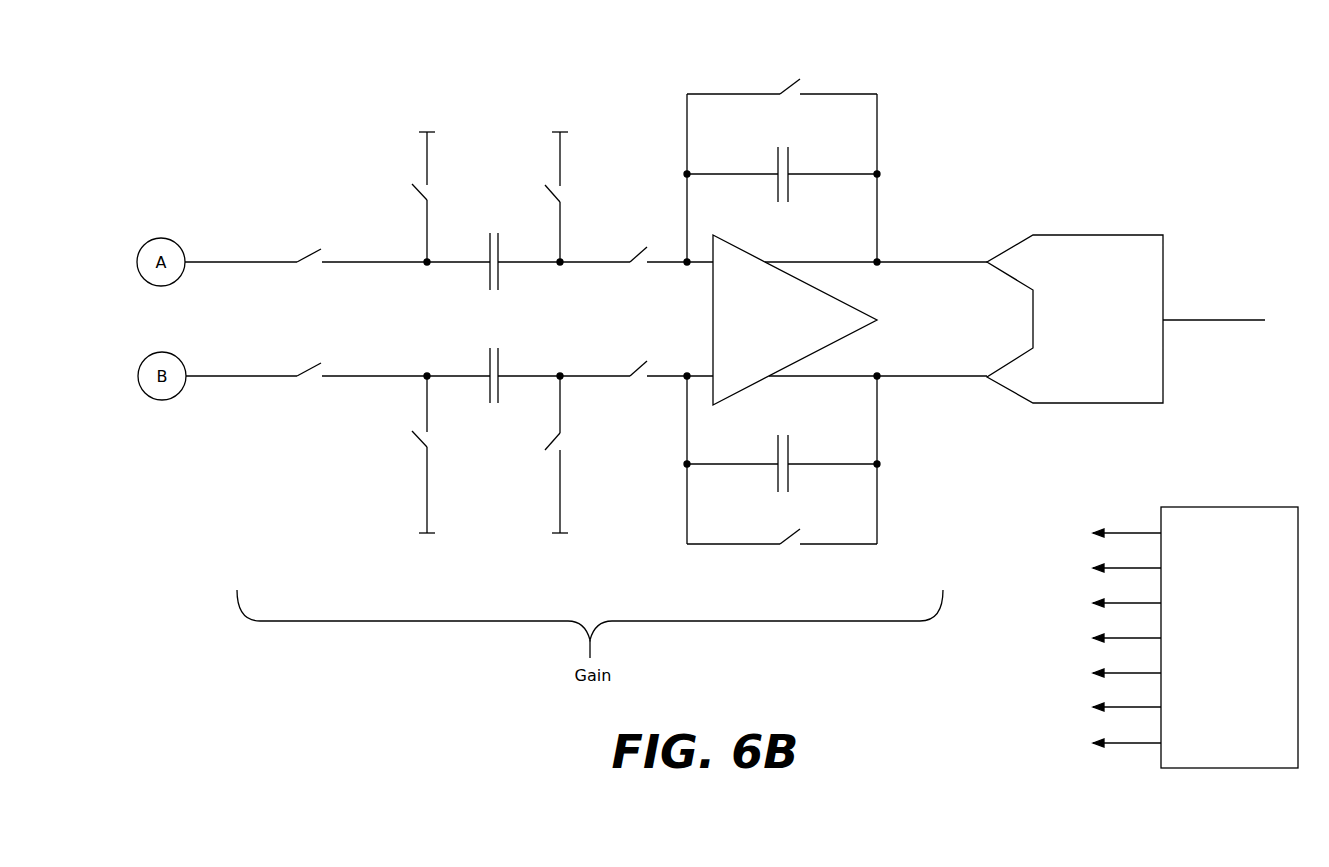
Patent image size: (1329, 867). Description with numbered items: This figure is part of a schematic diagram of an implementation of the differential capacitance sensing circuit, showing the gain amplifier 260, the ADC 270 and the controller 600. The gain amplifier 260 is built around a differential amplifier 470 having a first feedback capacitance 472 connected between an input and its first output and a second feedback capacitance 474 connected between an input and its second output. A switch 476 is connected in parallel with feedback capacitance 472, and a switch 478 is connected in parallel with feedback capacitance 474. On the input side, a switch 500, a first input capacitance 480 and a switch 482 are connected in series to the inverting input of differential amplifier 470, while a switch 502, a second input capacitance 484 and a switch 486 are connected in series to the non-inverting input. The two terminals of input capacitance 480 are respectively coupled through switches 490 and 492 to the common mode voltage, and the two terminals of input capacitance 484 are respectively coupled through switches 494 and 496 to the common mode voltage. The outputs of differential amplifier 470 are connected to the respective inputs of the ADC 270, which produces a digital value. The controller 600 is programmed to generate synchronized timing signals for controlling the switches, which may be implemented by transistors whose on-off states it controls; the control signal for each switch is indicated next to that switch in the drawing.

The gain amplifier 260 is at (797, 309).
The ADC 270 is at (1055, 232).
The differential amplifier 470 is at (858, 306).
The first feedback capacitance 472 is at (778, 152).
The second feedback capacitance 474 is at (777, 483).
The switch 476 is at (795, 83).
The switch 478 is at (792, 547).
The first input capacitance 480 is at (488, 277).
The switch 482 is at (630, 257).
The second input capacitance 484 is at (500, 367).
The switch 486 is at (630, 370).
The switch 490 is at (402, 199).
The switch 492 is at (542, 197).
The switch 494 is at (417, 447).
The switch 496 is at (548, 440).
The switch 500 is at (317, 253).
The switch 502 is at (317, 366).
The controller 600 is at (1178, 505).